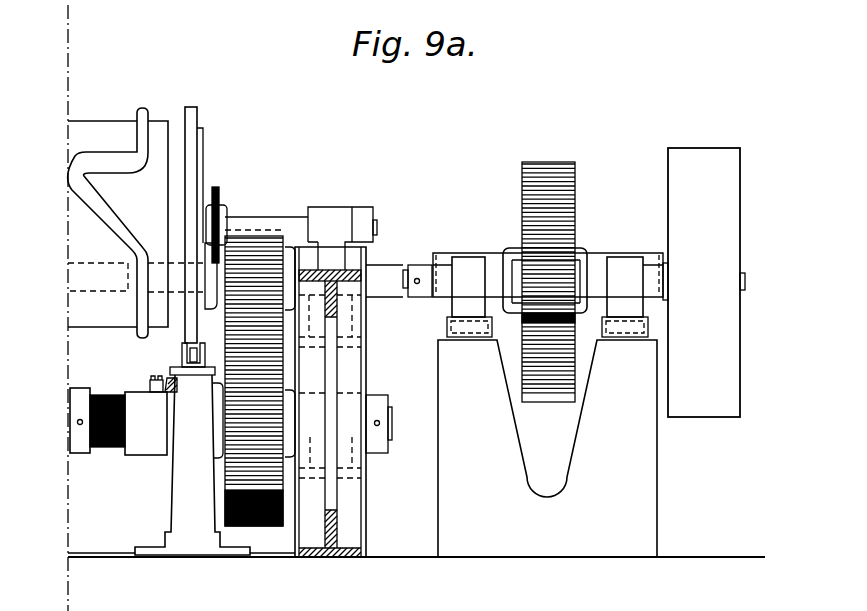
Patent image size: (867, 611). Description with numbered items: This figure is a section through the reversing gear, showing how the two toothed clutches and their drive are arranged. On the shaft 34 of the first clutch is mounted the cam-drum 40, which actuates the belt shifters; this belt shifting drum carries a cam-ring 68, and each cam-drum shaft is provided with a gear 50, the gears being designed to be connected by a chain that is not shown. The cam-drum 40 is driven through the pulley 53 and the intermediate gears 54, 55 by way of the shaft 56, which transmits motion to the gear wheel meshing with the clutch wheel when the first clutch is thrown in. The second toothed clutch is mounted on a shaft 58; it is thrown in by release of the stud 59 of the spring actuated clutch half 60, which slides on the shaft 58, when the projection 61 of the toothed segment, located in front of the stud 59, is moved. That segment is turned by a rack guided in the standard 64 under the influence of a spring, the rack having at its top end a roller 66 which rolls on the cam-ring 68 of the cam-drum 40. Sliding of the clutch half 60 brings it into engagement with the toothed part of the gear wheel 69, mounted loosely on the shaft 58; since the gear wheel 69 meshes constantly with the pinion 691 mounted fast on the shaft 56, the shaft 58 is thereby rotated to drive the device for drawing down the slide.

The shaft 34 is at (276, 217).
The cam-drum 40 is at (119, 324).
The gear 50 is at (218, 195).
The pulley 53 is at (718, 413).
The intermediate gear 54 is at (563, 257).
The intermediate gear 55 is at (565, 195).
The shaft 56 is at (90, 292).
The shaft 58 is at (102, 450).
The stud 59 is at (152, 388).
The clutch half 60 is at (158, 448).
The projection 61 is at (172, 378).
The standard 64 is at (185, 487).
The roller 66 is at (193, 350).
The cam-ring 68 is at (192, 121).
The gear wheel 69 is at (274, 519).
The pinion 691 is at (288, 237).